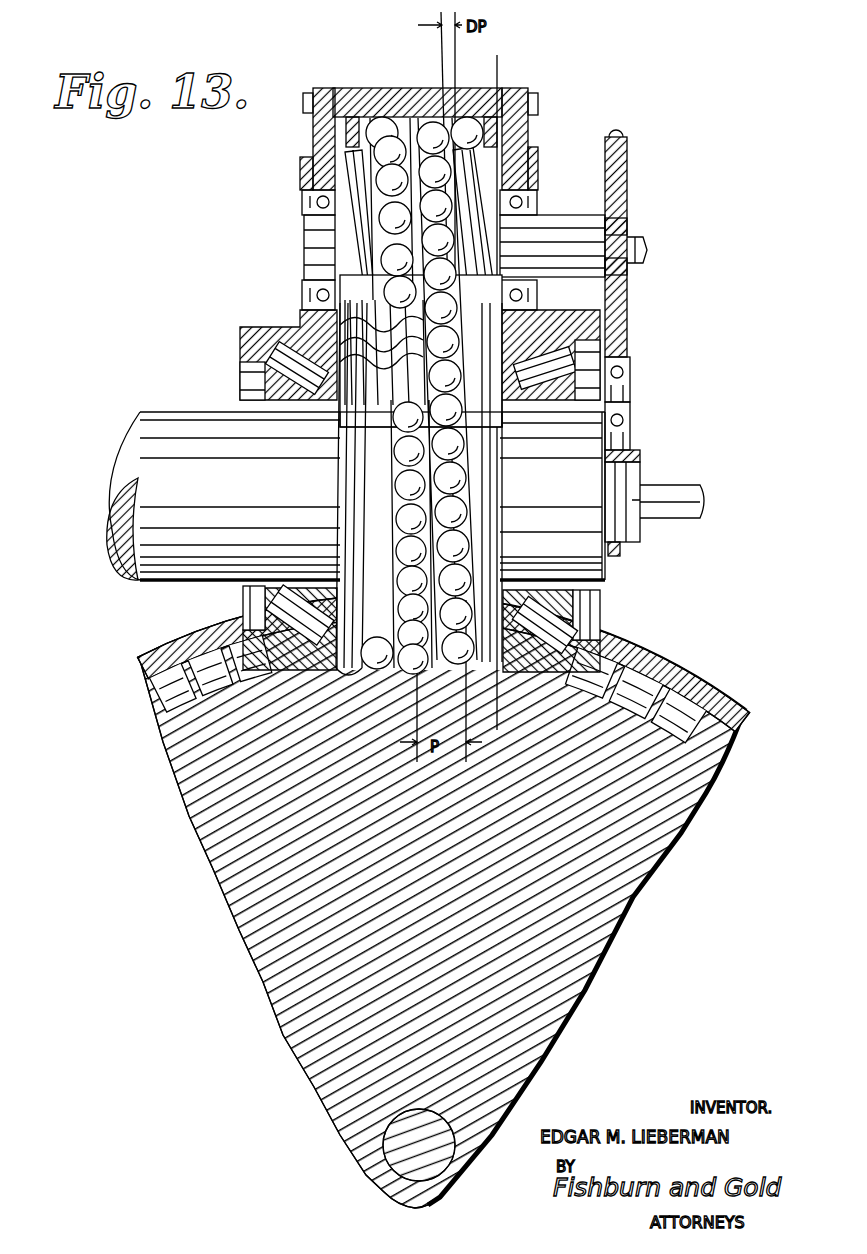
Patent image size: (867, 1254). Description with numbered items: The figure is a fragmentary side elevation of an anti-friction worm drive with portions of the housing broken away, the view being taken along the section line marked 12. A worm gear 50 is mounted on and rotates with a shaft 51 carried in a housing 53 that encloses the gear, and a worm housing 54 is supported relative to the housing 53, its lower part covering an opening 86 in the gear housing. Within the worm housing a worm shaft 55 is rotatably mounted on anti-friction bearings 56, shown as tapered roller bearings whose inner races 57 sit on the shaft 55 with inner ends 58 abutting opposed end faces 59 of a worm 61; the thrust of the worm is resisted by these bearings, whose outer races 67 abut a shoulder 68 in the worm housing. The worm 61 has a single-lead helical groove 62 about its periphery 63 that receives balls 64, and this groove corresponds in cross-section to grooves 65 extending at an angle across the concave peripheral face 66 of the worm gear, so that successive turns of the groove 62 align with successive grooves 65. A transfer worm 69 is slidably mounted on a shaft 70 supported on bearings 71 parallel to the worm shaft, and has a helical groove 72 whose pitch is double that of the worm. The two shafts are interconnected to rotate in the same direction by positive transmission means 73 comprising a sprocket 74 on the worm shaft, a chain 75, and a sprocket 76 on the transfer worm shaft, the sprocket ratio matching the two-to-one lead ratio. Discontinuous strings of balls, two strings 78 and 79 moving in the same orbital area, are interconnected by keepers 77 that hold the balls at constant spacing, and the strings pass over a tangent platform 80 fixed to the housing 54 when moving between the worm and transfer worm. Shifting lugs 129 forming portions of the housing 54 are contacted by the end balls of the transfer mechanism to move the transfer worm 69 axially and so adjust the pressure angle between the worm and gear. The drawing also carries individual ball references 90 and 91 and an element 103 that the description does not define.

The worm gear 50 is at (698, 690).
The shaft 51 is at (418, 1160).
The housing 53 is at (140, 667).
The worm housing 54 is at (310, 310).
The worm shaft 55 is at (190, 413).
The anti-friction bearings 56 is at (300, 405).
The inner races 57 is at (533, 410).
The inner ends 58 is at (560, 350).
The end faces 59 is at (345, 445).
The worm 61 is at (518, 540).
The groove 62 is at (356, 485).
The periphery 63 is at (345, 565).
The balls 64 is at (376, 670).
The grooves 65 is at (612, 712).
The peripheral face 66 is at (622, 668).
The outer races 67 is at (270, 360).
The shoulder 68 is at (242, 352).
The transfer worm 69 is at (348, 150).
The shaft 70 is at (555, 225).
The bearings 71 is at (318, 202).
The helical groove 72 is at (478, 162).
The positive transmission means 73 is at (630, 402).
The sprocket 74 is at (630, 556).
The chain 75 is at (626, 376).
The sprocket 76 is at (628, 302).
The keepers 77 is at (458, 362).
The string of balls 78 is at (460, 396).
The string of balls 79 is at (540, 555).
The tangent platform 80 is at (522, 300).
The opening 86 is at (243, 614).
The ball 90 is at (466, 117).
The ball 91 is at (388, 117).
The output shaft 103 is at (688, 490).
The shifting lugs 129 is at (312, 162).
The section line 12 is at (488, 62).